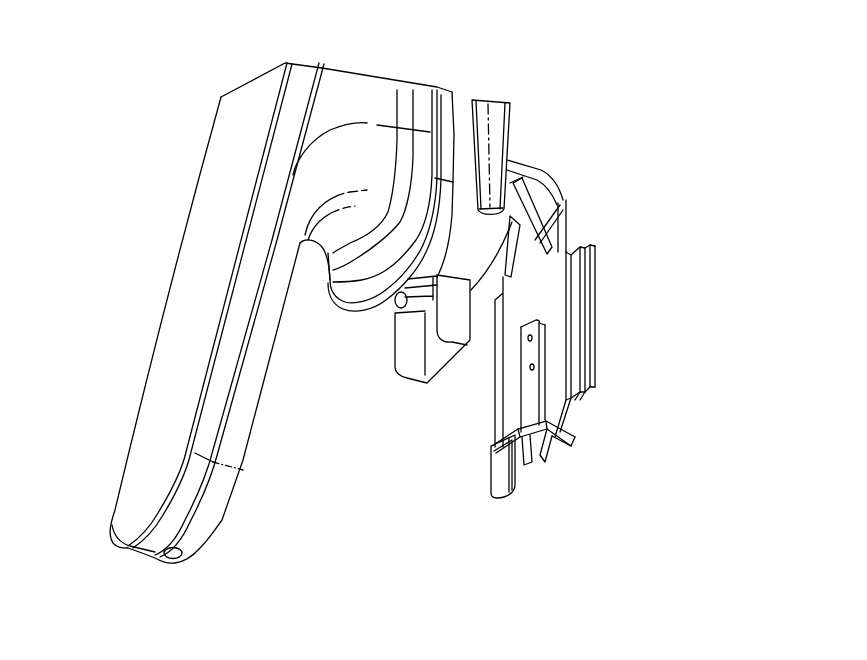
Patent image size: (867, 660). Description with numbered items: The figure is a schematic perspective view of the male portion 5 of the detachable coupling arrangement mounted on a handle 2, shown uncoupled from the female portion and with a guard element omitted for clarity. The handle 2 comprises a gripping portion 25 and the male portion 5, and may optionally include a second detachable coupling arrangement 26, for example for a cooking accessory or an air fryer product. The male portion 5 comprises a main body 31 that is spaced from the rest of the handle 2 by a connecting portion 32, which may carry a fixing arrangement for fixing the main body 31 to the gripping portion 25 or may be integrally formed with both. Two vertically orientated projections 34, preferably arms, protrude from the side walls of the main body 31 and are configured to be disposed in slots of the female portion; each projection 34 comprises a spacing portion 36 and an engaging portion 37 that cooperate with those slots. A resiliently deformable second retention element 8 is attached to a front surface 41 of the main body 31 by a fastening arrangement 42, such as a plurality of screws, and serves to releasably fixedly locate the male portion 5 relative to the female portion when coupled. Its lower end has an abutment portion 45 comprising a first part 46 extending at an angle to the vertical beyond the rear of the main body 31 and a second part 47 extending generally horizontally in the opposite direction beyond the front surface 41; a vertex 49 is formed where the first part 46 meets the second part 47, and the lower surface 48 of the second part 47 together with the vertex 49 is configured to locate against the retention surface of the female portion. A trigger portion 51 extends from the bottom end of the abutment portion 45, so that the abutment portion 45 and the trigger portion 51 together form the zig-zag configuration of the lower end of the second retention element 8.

The handle 2 is at (150, 89).
The gripping portion 25 is at (167, 330).
The second detachable coupling arrangement 26 is at (457, 117).
The male portion 5 is at (556, 232).
The connecting portion 32 is at (520, 168).
The main body 31 is at (572, 248).
The front surface 41 is at (532, 306).
The fastening arrangement 42 is at (528, 335).
The projection 34 is at (585, 325).
The engaging portion 37 is at (590, 353).
The spacing portion 36 is at (568, 378).
The second retention element 8 is at (527, 355).
The abutment portion 45 is at (480, 433).
The first part 46 is at (553, 426).
The vertex 49 is at (550, 435).
The lower surface 48 is at (548, 452).
The second part 47 is at (527, 450).
The trigger portion 51 is at (505, 470).